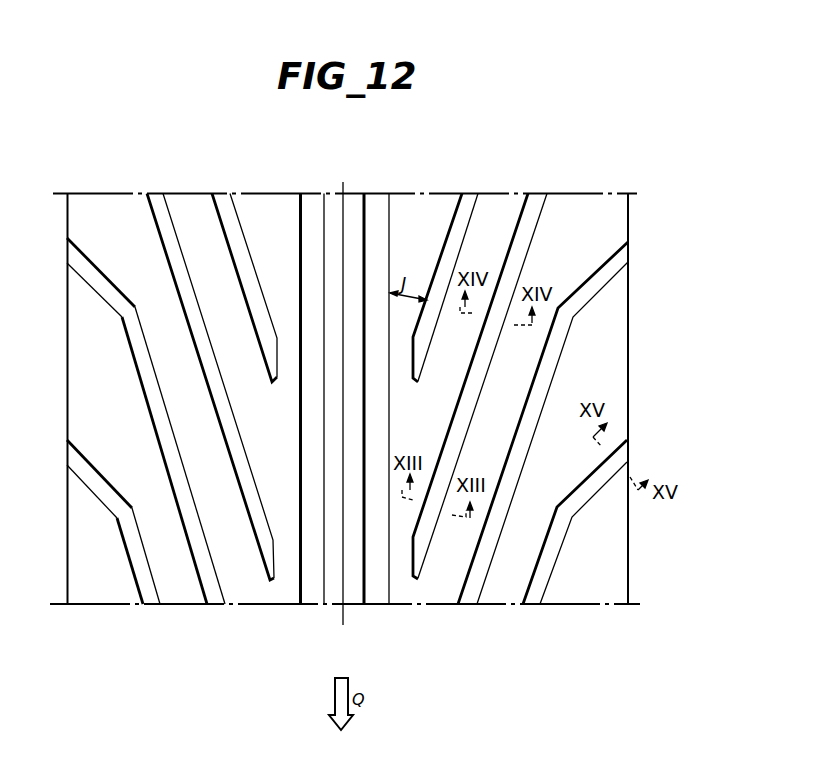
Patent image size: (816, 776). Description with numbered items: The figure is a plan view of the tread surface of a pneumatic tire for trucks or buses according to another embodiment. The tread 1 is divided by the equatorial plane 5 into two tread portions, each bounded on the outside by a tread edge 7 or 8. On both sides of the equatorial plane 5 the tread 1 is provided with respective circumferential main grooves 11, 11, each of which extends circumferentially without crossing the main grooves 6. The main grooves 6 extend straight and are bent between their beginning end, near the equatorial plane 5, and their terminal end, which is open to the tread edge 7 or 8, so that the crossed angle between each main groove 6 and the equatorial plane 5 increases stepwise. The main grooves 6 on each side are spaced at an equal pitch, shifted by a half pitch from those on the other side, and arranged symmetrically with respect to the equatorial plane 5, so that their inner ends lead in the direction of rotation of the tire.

The tread 1 is at (582, 207).
The equatorial plane 5 is at (345, 194).
The main grooves 6 is at (200, 337).
The tread edge 7 is at (67, 340).
The tread edge 8 is at (630, 333).
The circumferential main grooves 11 is at (310, 223).